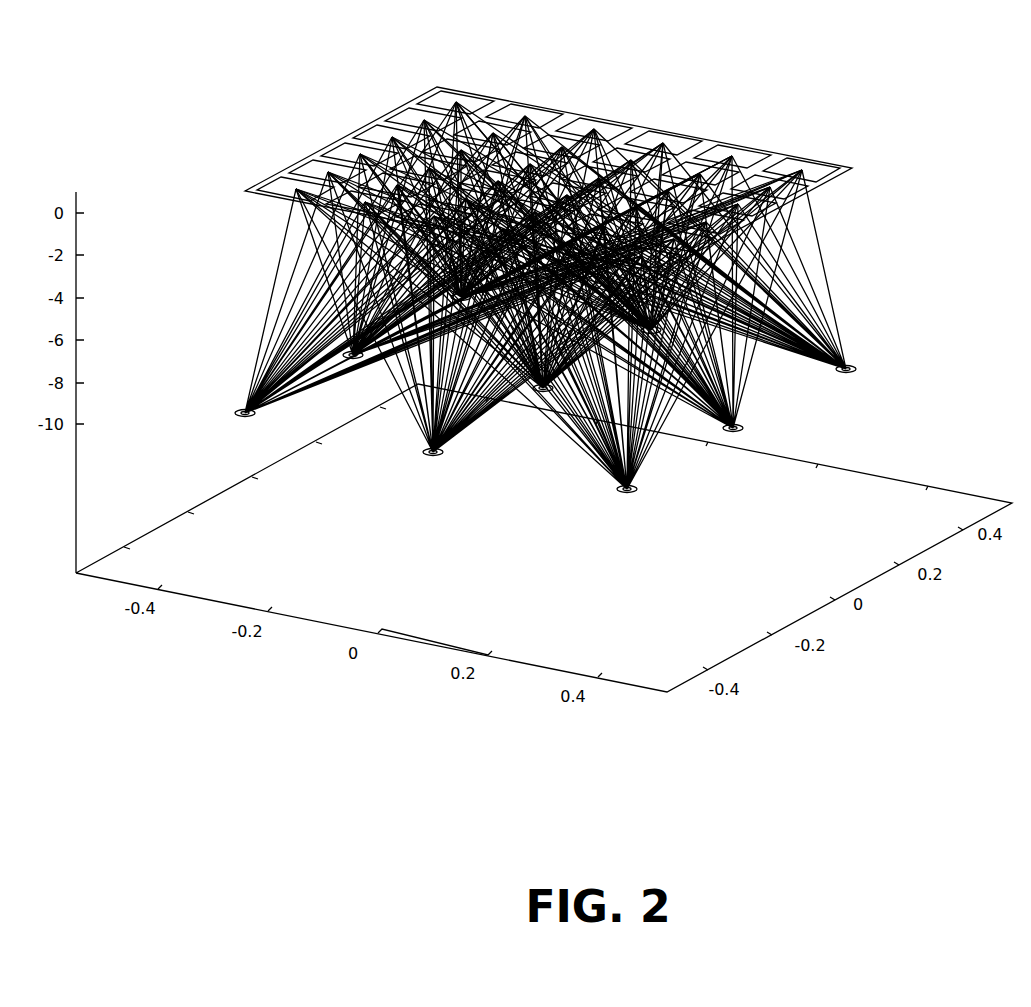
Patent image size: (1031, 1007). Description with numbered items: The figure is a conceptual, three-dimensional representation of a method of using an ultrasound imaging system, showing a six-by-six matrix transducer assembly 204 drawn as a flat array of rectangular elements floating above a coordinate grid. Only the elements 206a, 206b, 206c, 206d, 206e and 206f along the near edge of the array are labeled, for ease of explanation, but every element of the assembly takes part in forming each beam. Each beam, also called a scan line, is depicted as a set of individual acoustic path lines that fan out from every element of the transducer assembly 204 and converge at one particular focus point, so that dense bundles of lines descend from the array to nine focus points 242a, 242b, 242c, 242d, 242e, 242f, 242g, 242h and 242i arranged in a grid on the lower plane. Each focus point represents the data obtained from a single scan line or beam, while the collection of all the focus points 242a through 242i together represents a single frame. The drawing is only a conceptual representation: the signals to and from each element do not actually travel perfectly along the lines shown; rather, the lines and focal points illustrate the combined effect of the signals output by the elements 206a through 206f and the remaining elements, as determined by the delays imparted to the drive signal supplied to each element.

The matrix transducer assembly 204 is at (287, 113).
The element 206a is at (462, 92).
The element 206b is at (513, 115).
The element 206c is at (600, 127).
The element 206d is at (687, 140).
The element 206e is at (730, 148).
The element 206f is at (817, 160).
The focus point 242a is at (237, 412).
The focus point 242b is at (397, 437).
The focus point 242c is at (617, 499).
The focus point 242d is at (336, 368).
The focus point 242e is at (533, 389).
The focus point 242f is at (738, 435).
The focus point 242g is at (549, 201).
The focus point 242h is at (549, 218).
The focus point 242i is at (860, 372).